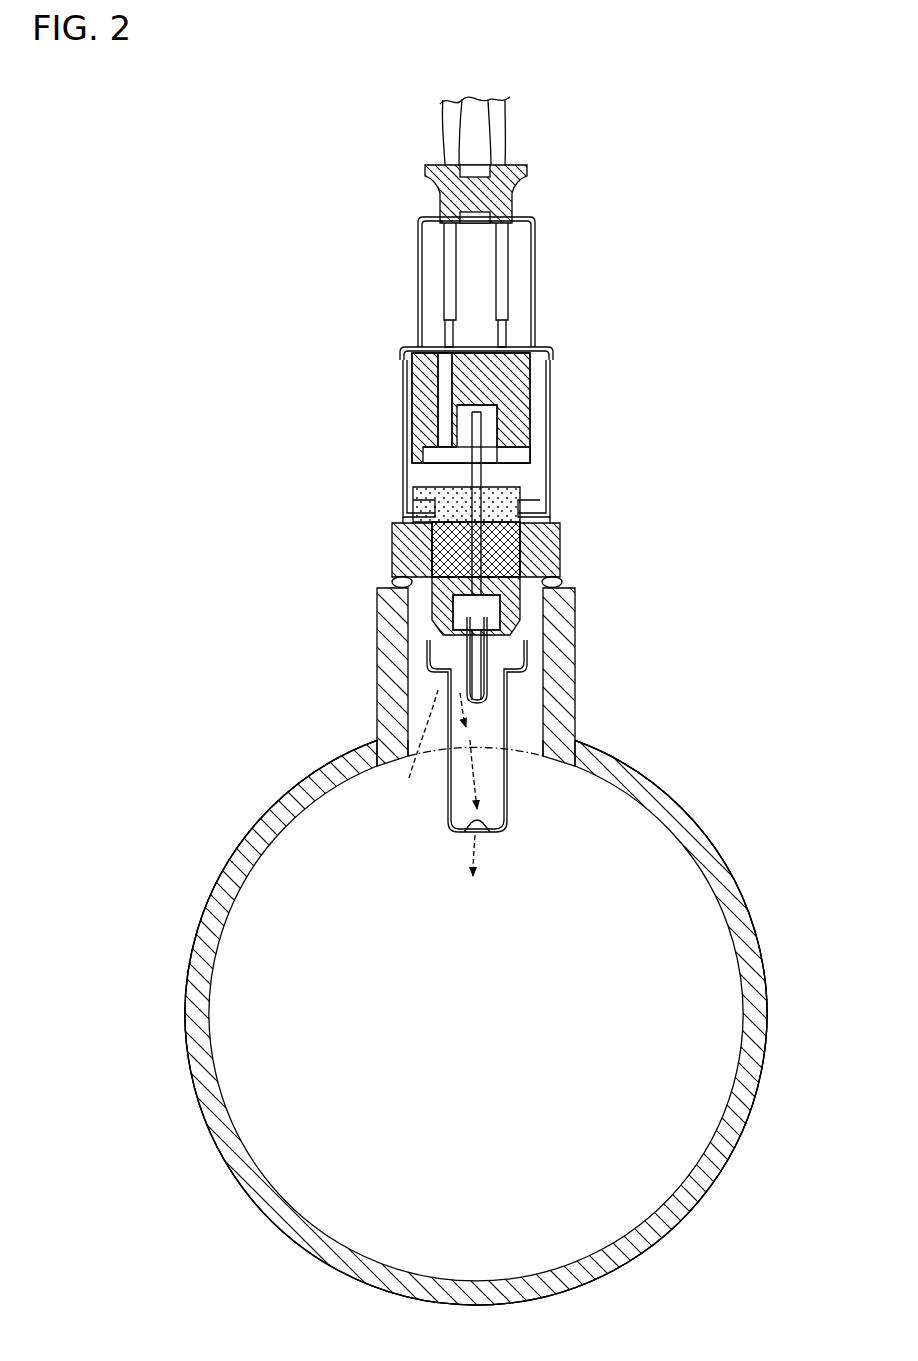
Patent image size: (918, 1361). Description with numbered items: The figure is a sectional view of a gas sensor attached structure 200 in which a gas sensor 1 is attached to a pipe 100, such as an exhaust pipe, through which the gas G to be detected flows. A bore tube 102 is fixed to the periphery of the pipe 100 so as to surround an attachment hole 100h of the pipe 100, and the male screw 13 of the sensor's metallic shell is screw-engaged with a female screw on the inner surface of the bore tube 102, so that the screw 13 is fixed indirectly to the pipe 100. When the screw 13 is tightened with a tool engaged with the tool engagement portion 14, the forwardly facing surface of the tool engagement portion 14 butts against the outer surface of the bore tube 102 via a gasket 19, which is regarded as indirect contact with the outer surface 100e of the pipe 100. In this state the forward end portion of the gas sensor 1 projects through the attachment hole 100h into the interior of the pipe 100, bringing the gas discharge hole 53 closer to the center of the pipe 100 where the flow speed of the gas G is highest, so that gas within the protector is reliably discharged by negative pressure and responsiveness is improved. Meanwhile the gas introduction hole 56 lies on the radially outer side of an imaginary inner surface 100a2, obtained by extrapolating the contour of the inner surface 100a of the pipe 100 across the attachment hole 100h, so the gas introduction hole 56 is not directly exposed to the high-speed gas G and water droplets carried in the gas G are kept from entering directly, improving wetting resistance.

The gas sensor 1 is at (598, 236).
The screw 13 is at (393, 606).
The tool engagement portion 14 is at (396, 540).
The gasket 19 is at (392, 582).
The gas discharge hole 53 is at (490, 830).
The gas introduction hole 56 is at (440, 680).
The pipe 100 is at (740, 883).
The inner surface of the pipe 100a is at (656, 835).
The imaginary inner surface 100a2 is at (520, 755).
The outer surface of the pipe 100e is at (284, 806).
The attachment hole 100h is at (433, 766).
The bore tube 102 is at (576, 658).
The gas sensor attached structure 200 is at (714, 662).
The gas to be detected G is at (434, 783).